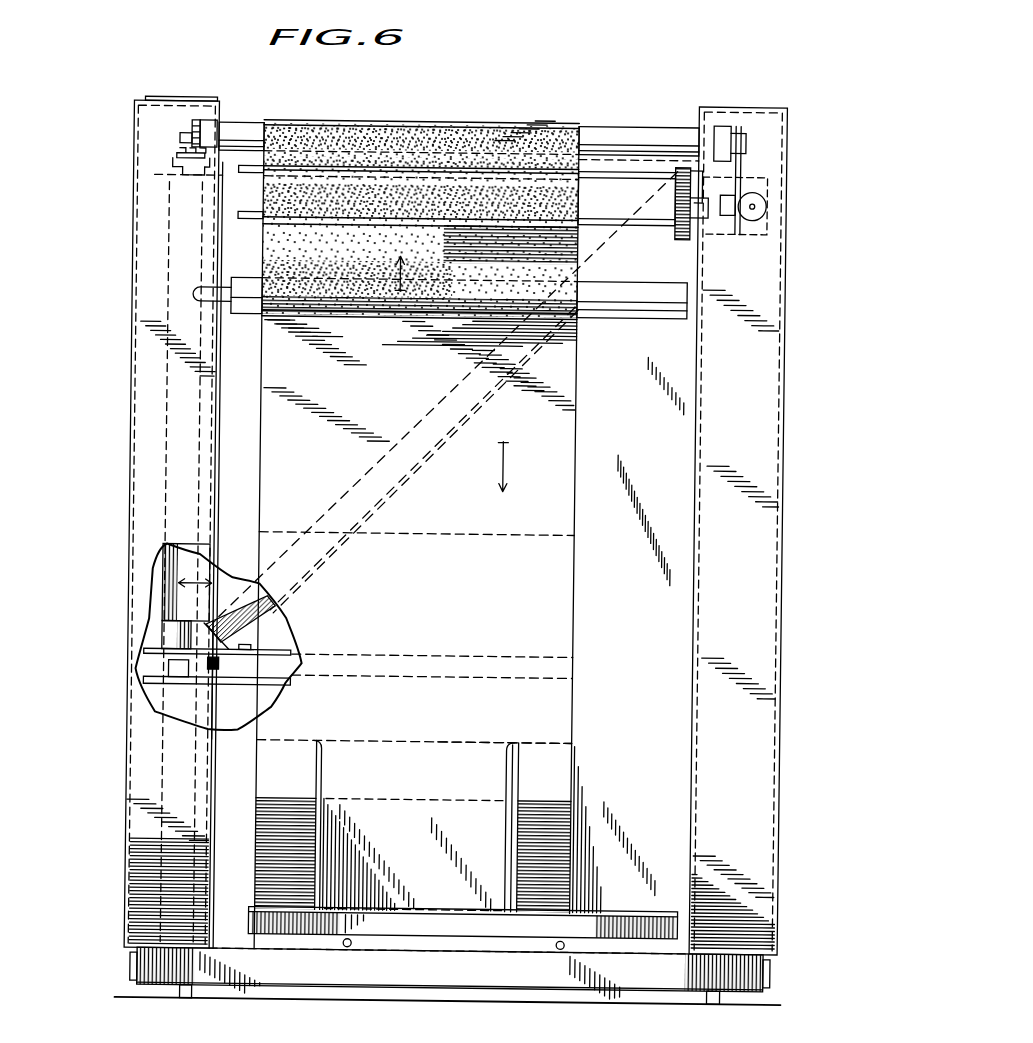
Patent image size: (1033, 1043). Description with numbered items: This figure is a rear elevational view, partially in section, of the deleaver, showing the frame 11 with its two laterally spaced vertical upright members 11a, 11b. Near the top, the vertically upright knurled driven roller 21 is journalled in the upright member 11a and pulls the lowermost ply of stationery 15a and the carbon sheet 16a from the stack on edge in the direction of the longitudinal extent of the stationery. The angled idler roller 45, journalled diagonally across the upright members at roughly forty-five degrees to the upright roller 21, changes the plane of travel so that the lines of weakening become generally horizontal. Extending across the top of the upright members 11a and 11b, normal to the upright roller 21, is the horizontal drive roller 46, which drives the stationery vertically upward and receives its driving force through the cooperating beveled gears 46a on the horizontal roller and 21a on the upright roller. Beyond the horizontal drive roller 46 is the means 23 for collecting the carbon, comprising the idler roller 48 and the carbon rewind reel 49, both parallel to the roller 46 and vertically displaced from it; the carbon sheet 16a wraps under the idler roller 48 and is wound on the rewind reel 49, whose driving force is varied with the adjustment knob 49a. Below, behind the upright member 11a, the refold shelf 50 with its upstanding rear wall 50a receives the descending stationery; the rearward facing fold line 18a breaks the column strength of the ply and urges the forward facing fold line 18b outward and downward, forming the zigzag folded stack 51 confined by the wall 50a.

The frame 11 is at (130, 436).
The upright member 11a is at (146, 368).
The upright member 11b is at (752, 432).
The lowermost ply of stationery 15a is at (440, 717).
The carbon sheet 16a is at (440, 268).
The rearward facing fold line 18a is at (282, 742).
The forward facing fold line 18b is at (436, 538).
The driven roller 21 is at (170, 635).
The beveled gear 21a is at (178, 157).
The means for collecting the carbon sheets 23 is at (658, 264).
The idler roller 45 is at (272, 620).
The horizontal drive roller 46 is at (615, 128).
The beveled gear 46a is at (195, 126).
The idler roller 48 is at (630, 320).
The carbon rewind reel 49 is at (256, 217).
The adjustment knob 49a is at (762, 203).
The refold shelf 50 is at (588, 912).
The upstanding rear wall 50a is at (470, 742).
The zigzag folded stack 51 is at (576, 826).